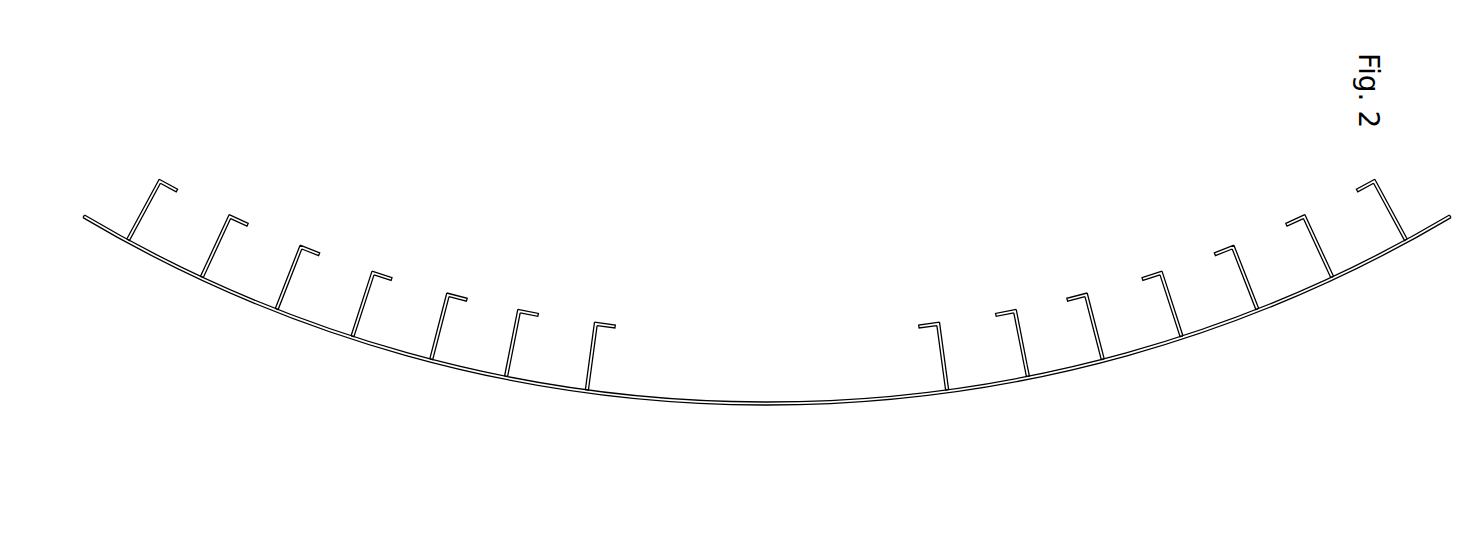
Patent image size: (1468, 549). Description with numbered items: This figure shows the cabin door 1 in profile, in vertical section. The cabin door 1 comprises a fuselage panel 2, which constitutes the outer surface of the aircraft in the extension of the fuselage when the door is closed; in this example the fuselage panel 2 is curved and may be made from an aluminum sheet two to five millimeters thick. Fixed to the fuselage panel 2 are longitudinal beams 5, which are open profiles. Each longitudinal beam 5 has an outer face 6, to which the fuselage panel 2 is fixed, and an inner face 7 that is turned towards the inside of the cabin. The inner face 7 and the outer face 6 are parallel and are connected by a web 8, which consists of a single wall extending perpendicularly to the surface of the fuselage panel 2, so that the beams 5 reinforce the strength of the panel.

The cabin door 1 is at (1377, 327).
The fuselage panel 2 is at (1232, 327).
The longitudinal beam 5 is at (365, 307).
The outer face 6 is at (503, 373).
The inner face 7 is at (540, 314).
The web 8 is at (597, 347).